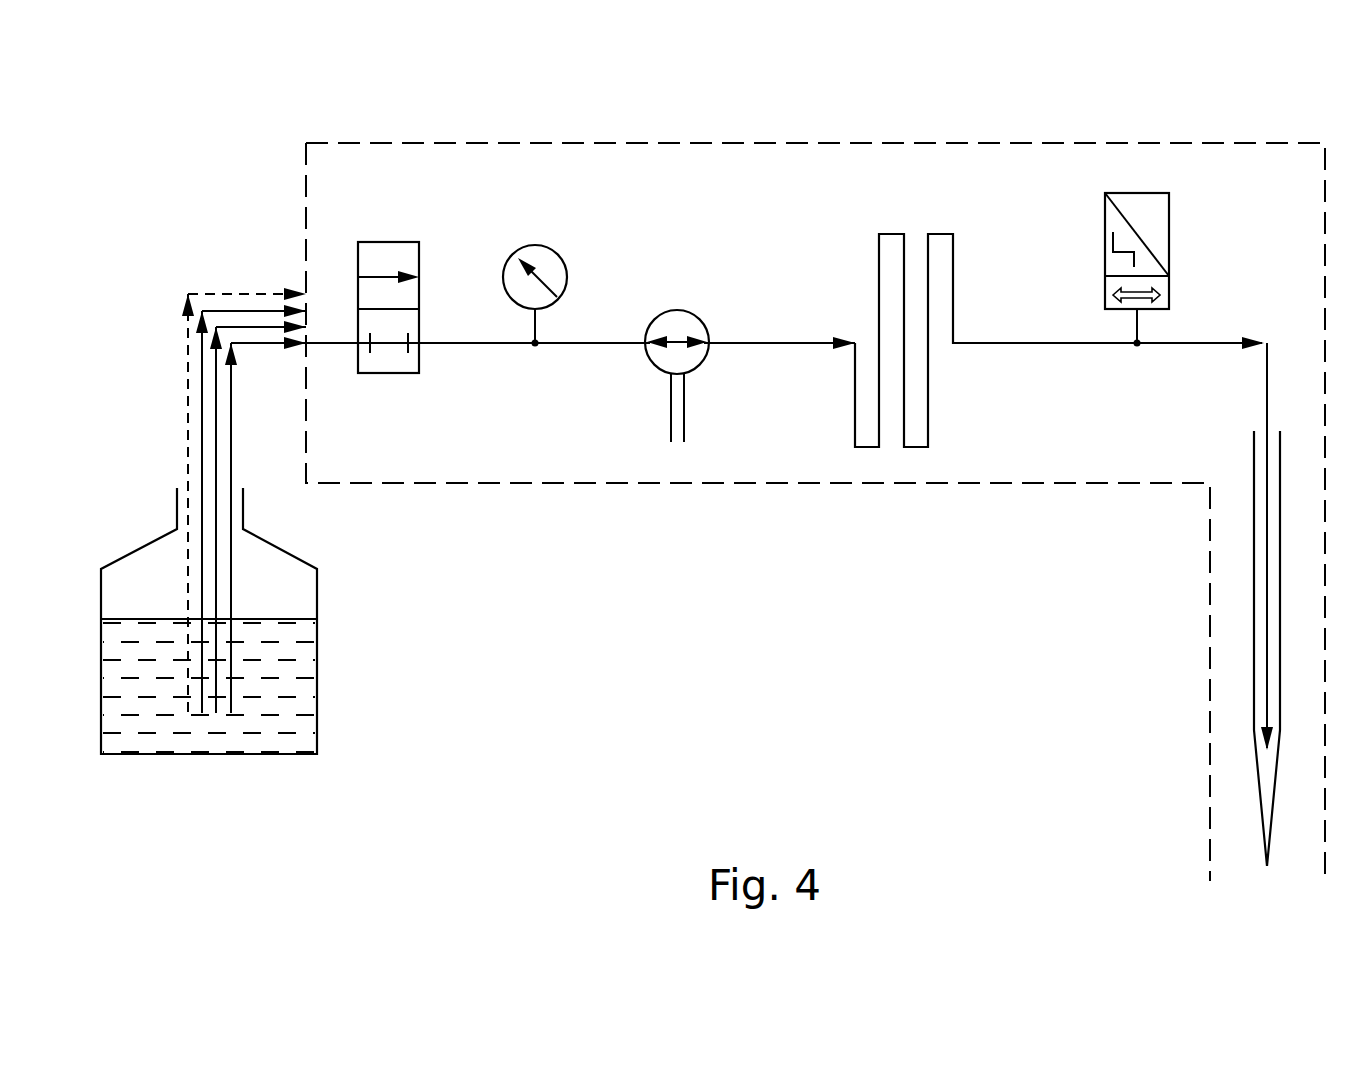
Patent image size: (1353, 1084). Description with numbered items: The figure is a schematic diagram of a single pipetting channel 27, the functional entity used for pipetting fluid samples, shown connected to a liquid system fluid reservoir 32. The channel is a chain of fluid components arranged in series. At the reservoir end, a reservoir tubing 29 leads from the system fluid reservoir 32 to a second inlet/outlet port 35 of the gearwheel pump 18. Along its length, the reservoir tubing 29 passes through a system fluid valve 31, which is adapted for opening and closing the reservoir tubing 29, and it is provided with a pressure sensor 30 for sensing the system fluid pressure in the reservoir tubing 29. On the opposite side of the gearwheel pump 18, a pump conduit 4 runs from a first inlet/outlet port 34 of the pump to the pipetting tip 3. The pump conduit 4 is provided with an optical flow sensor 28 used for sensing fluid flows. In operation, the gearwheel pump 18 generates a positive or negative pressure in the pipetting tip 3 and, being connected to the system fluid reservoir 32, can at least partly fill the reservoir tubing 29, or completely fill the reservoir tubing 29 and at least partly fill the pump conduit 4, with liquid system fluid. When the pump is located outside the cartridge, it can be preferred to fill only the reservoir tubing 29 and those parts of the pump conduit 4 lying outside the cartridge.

The pipetting channel 27 is at (758, 143).
The system fluid valve 31 is at (387, 242).
The pressure sensor 30 is at (533, 243).
The reservoir tubing 29 is at (463, 343).
The gearwheel pump 18 is at (677, 310).
The second inlet/outlet port 35 is at (645, 345).
The first inlet/outlet port 34 is at (709, 345).
The pump conduit 4 is at (891, 234).
The optical flow sensor 28 is at (1172, 234).
The pipetting tip 3 is at (1254, 645).
The system fluid reservoir 32 is at (317, 706).